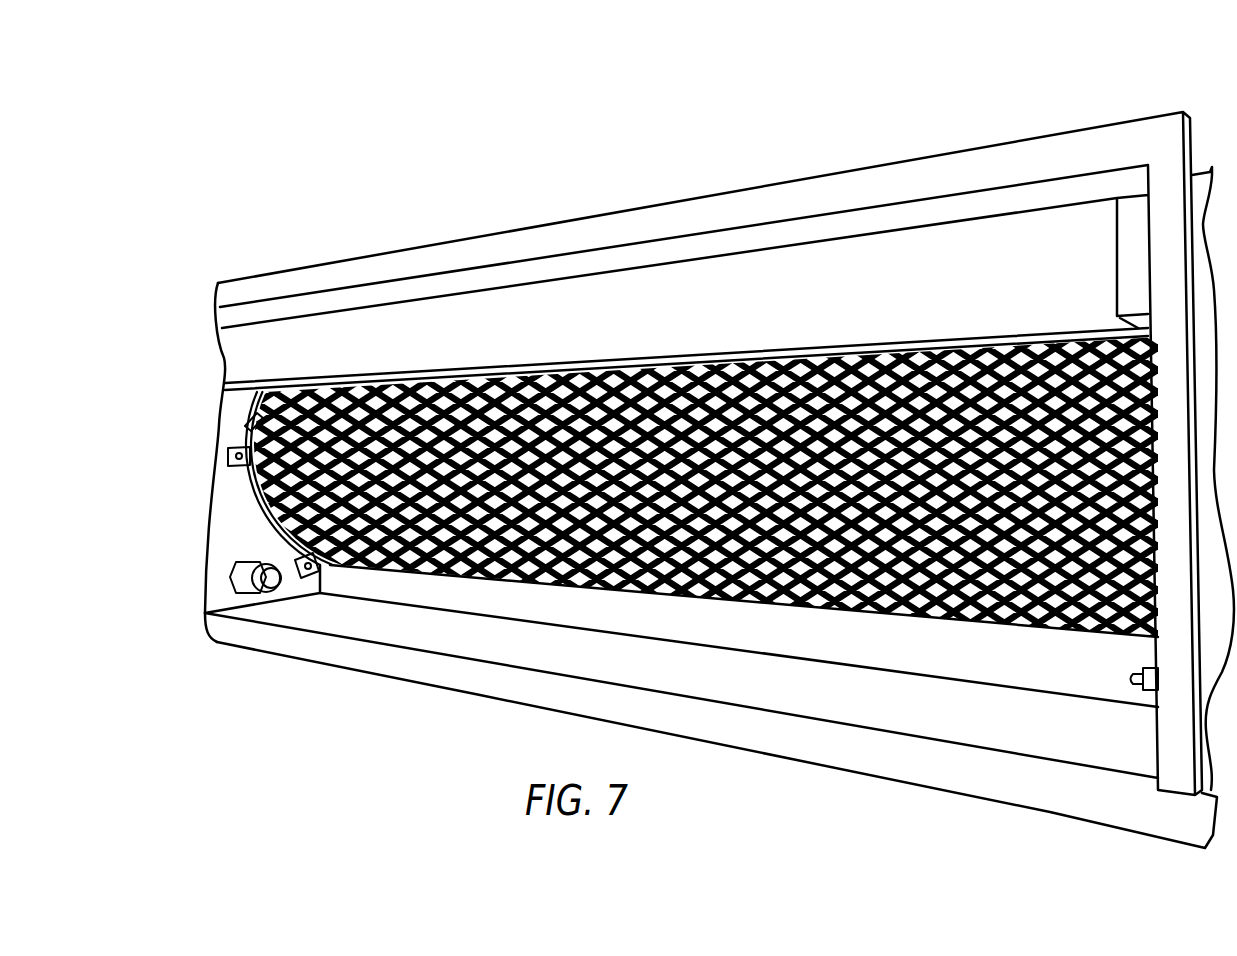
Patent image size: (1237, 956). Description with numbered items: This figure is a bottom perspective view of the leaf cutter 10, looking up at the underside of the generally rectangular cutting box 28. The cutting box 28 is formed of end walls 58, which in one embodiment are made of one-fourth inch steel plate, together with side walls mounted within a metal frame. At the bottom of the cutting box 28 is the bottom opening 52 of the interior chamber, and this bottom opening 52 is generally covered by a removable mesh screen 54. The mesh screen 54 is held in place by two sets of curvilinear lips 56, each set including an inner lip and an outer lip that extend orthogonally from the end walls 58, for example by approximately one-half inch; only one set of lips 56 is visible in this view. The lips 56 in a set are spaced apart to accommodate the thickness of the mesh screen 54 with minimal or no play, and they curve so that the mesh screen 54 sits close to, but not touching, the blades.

The cargo rack assembly 10 is at (256, 237).
The cutting box 28 is at (1142, 112).
The bottom opening 52 is at (356, 581).
The mesh screen 54 is at (302, 499).
The curvilinear lips 56 is at (250, 481).
The end walls 58 is at (232, 424).